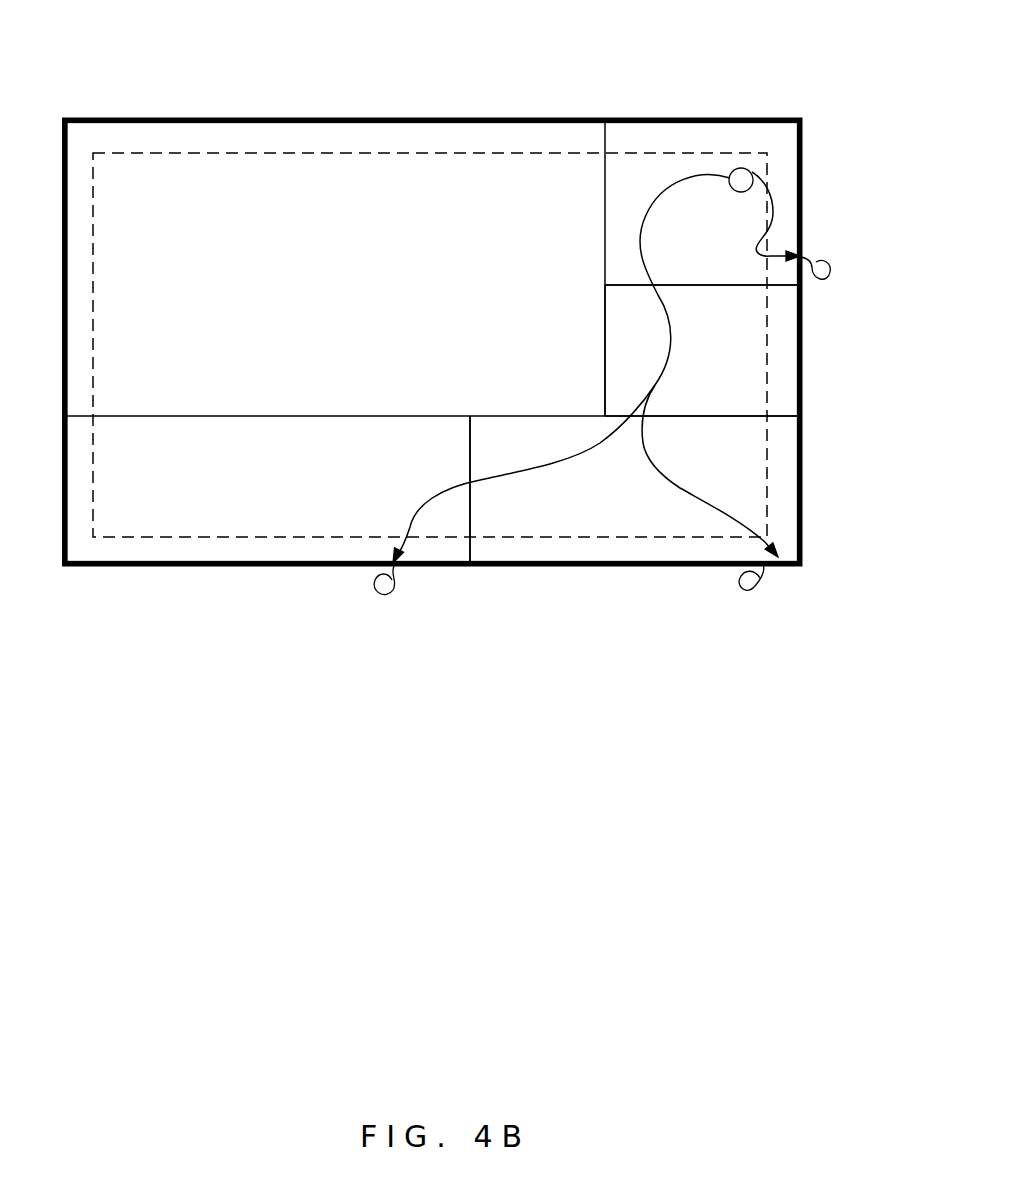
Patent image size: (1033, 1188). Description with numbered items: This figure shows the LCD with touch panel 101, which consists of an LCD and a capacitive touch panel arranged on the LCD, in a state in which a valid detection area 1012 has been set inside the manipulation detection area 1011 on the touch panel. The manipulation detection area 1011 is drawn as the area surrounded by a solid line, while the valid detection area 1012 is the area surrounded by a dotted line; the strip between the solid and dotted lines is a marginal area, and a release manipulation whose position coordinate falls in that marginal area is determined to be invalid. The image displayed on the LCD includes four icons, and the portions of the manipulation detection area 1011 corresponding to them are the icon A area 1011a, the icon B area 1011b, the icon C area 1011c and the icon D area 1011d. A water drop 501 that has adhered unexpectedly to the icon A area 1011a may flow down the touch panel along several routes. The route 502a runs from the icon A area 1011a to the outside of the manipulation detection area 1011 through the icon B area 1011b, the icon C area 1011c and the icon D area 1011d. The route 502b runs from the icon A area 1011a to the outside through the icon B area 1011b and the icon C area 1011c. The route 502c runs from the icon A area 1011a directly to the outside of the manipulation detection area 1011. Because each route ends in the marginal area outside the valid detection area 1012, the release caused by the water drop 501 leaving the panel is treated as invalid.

The LCD with touch panel 101 is at (494, 99).
The manipulation detection area 1011 is at (213, 120).
The valid detection area 1012 is at (287, 153).
The icon A area 1011a is at (605, 218).
The icon B area 1011b is at (605, 342).
The icon C area 1011c is at (535, 416).
The icon D area 1011d is at (213, 416).
The water drop 501 is at (748, 170).
The route of the water drop 502a is at (510, 477).
The route of the water drop 502b is at (705, 500).
The route of the water drop 502c is at (773, 202).